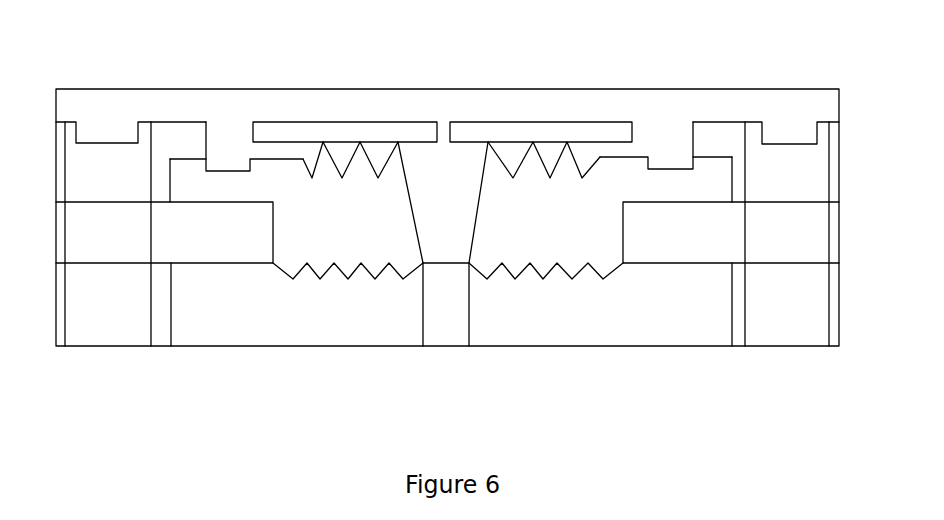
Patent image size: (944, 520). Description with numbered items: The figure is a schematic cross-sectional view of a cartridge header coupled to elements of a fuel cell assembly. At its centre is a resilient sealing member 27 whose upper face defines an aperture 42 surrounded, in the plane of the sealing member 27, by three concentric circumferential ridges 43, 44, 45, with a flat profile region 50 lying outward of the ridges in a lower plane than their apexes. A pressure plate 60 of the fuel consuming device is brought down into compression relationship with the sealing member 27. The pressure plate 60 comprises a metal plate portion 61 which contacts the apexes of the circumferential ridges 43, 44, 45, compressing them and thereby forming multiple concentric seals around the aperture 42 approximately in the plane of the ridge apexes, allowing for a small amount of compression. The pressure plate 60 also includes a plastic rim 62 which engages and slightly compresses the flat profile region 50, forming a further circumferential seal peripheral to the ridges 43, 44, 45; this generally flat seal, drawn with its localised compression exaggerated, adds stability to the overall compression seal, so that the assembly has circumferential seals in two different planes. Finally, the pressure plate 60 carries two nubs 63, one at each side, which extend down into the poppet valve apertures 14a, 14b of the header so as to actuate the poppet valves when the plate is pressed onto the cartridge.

The poppet valve aperture 14a is at (103, 247).
The poppet valve aperture 14b is at (777, 237).
The resilient sealing member 27 is at (575, 225).
The aperture 42 is at (448, 245).
The circumferential ridge 43 is at (325, 145).
The circumferential ridge 44 is at (360, 145).
The circumferential ridge 45 is at (397, 145).
The flat profile region 50 is at (708, 157).
The pressure plate 60 is at (125, 100).
The metal plate portion 61 is at (377, 122).
The plastic rim 62 is at (227, 160).
The nub 63 is at (103, 133).